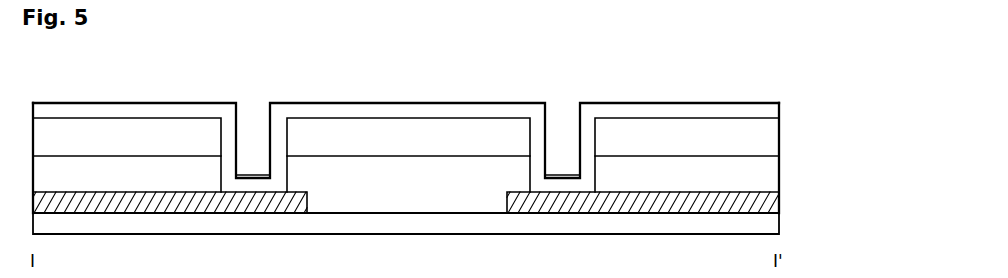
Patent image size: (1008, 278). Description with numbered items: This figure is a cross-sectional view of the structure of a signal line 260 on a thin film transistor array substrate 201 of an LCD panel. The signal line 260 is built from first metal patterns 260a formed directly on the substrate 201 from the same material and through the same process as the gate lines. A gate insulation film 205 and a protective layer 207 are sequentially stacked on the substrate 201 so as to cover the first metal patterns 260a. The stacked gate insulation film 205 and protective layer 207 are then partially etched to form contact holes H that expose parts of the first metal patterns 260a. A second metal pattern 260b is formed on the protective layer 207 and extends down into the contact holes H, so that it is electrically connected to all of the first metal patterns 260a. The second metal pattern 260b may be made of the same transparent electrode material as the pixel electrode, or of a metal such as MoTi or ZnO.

The substrate 201 is at (779, 223).
The gate insulation film 205 is at (164, 163).
The protective layer 207 is at (77, 135).
The signal line 260 is at (474, 156).
The first metal patterns 260a is at (779, 202).
The second metal pattern 260b is at (779, 111).
The contact holes H is at (256, 134).